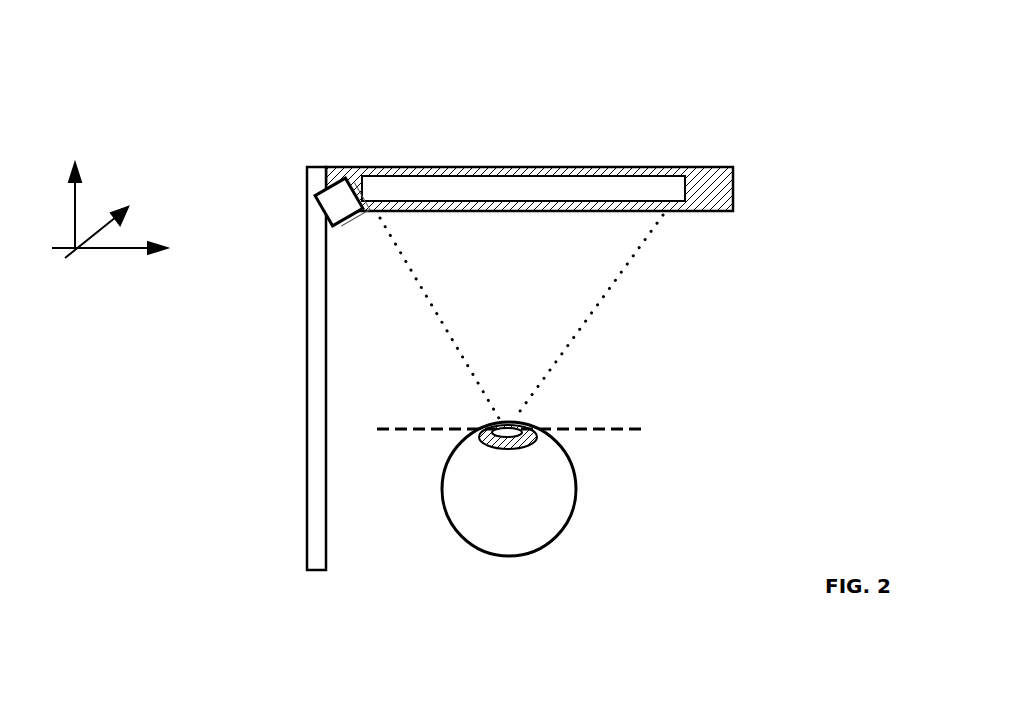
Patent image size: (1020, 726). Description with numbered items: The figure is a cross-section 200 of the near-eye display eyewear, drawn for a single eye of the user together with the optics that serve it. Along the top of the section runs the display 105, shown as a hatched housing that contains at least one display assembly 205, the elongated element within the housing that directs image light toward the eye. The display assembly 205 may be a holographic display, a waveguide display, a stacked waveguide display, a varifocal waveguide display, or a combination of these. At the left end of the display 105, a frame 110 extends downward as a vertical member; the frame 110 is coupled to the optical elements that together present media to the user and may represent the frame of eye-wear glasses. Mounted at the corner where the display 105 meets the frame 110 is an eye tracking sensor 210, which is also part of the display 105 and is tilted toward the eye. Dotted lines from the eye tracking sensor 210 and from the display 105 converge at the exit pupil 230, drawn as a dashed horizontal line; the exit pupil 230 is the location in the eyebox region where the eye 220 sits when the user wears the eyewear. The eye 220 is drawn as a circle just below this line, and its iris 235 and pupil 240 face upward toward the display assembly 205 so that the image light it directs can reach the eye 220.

The cross-section 200 is at (102, 33).
The display 105 is at (566, 118).
The display assembly 205 is at (523, 117).
The frame 110 is at (307, 385).
The eye tracking sensor 210 is at (332, 198).
The eye 220 is at (450, 522).
The exit pupil 230 is at (645, 430).
The iris 235 is at (483, 447).
The pupil 240 is at (513, 434).